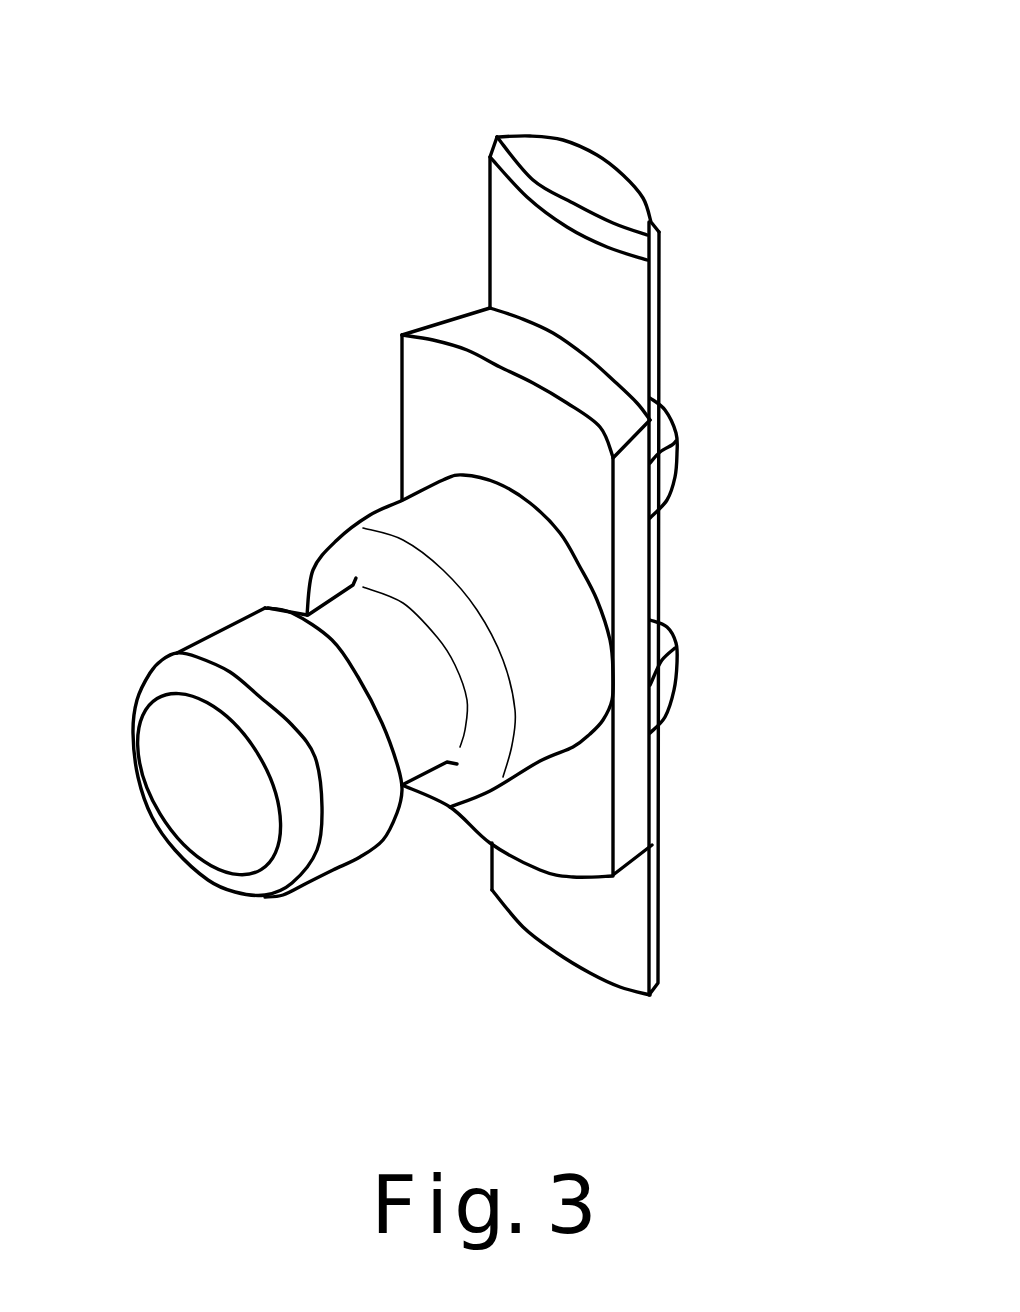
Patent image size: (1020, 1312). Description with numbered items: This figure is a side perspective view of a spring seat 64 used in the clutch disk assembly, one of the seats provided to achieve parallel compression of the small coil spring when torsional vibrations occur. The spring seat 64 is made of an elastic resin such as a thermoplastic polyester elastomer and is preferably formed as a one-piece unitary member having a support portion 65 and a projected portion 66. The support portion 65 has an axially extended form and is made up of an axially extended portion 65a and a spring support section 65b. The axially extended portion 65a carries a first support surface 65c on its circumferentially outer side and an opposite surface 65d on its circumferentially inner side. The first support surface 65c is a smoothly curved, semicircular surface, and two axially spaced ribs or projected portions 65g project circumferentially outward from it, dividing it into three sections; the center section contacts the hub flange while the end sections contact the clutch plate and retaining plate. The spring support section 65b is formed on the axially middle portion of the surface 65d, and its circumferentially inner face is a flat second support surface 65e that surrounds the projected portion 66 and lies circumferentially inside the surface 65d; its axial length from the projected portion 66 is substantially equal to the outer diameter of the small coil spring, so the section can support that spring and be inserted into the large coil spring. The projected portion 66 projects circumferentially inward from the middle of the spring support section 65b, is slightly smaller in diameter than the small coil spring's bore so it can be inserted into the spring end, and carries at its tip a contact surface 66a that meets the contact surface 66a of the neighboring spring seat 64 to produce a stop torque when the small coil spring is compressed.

The spring seat 64 is at (690, 108).
The support portion 65 is at (688, 298).
The axially extended portion 65a is at (527, 133).
The spring support section 65b is at (403, 332).
The first support surface 65c is at (658, 577).
The opposite surface 65d is at (520, 247).
The second support surface 65e is at (435, 422).
The projected portion (rib) 65g is at (663, 477).
The projected portion 66 is at (265, 688).
The contact surface 66a is at (185, 787).